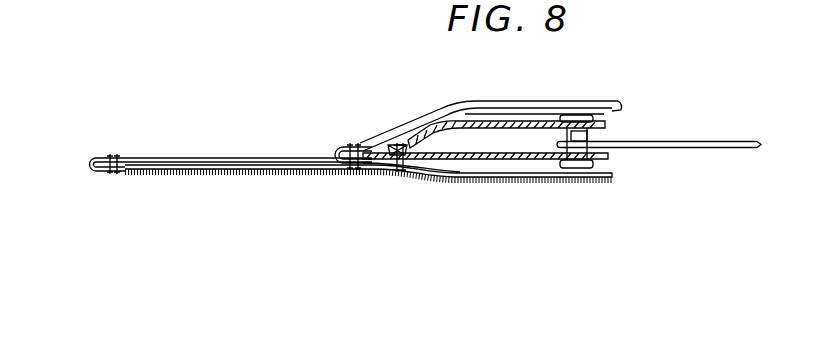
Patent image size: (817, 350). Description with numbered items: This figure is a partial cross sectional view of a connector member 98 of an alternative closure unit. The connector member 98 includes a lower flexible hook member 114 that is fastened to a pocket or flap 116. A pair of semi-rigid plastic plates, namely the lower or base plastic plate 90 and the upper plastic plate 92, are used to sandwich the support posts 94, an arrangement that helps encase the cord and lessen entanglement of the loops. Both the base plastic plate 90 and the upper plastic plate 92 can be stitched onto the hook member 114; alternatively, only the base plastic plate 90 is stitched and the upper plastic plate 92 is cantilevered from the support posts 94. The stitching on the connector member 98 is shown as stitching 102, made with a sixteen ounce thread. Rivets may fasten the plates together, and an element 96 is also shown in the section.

The base plastic plate 90 is at (498, 158).
The upper plastic plate 92 is at (527, 122).
The support posts 94 is at (618, 139).
The fastener 96 is at (577, 115).
The connector member 98 is at (455, 104).
The stitching 102 is at (400, 143).
The lower flexible hook member 114 is at (273, 172).
The pocket or flap 116 is at (622, 106).